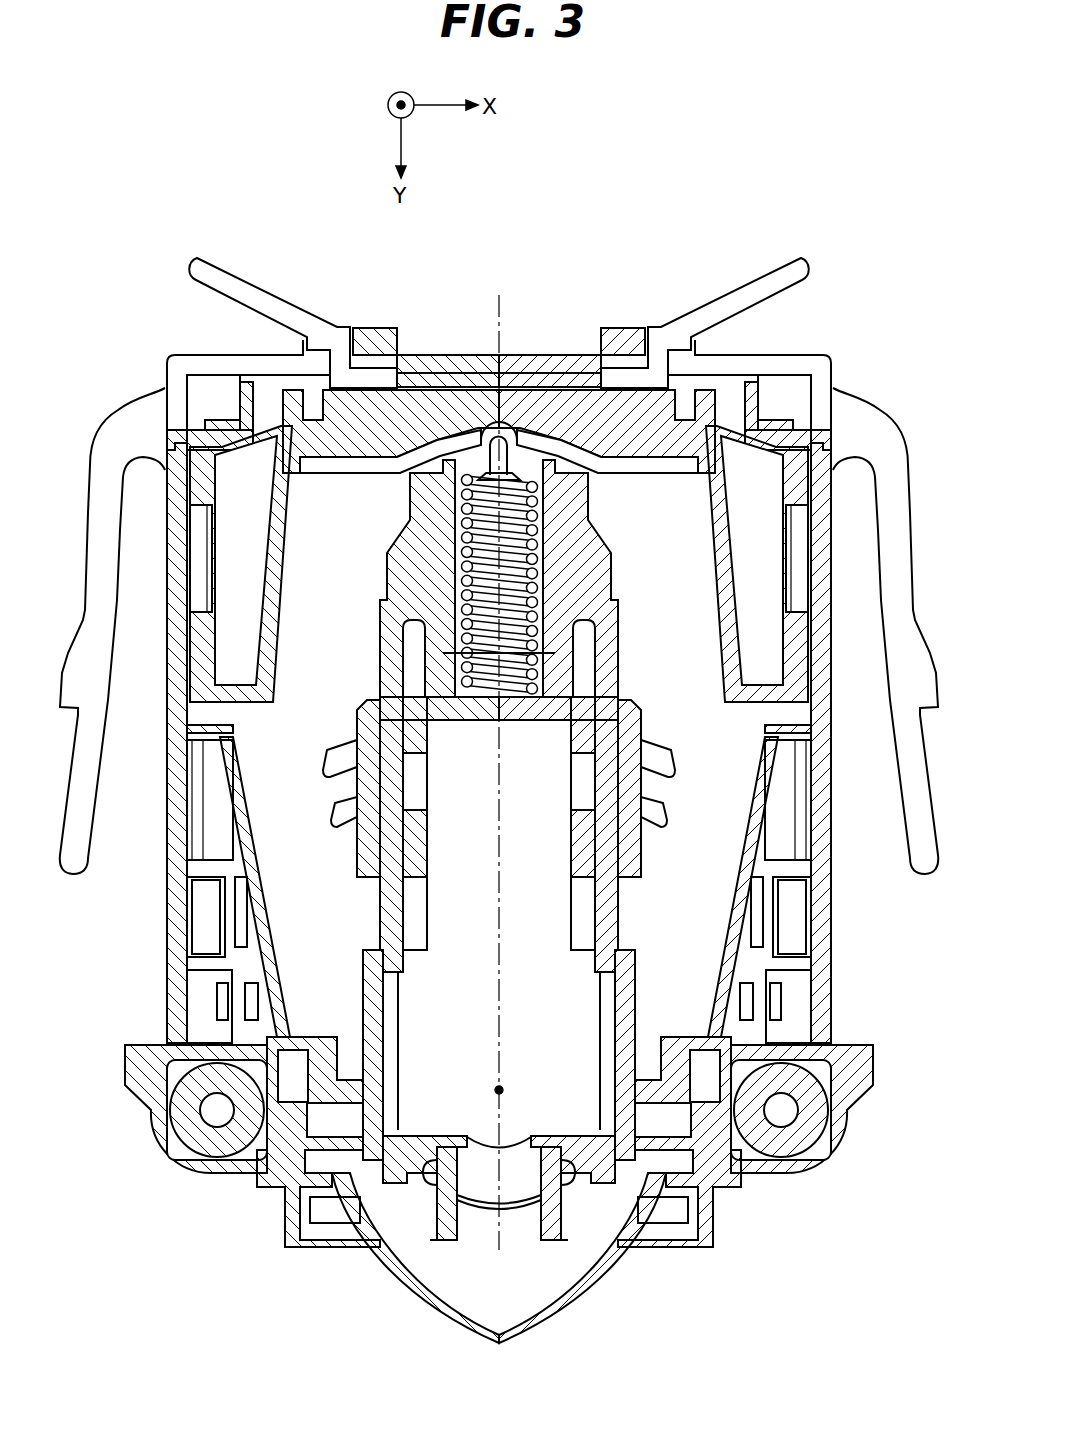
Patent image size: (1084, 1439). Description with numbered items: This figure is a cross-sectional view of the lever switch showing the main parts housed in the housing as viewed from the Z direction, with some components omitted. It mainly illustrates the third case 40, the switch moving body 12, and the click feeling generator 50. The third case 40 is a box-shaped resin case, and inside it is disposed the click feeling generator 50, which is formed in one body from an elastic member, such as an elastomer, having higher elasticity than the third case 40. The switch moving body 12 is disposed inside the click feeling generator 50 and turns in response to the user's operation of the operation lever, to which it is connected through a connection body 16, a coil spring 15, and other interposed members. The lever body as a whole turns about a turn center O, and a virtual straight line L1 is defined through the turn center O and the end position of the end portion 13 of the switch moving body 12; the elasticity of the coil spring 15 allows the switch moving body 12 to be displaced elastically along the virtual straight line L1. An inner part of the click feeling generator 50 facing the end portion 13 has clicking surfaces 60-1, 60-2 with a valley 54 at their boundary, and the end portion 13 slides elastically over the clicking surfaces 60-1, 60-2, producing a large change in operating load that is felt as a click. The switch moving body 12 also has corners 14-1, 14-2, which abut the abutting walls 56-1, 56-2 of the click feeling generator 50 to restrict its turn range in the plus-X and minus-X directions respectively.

The switch moving body 12 is at (617, 623).
The end portion 13 is at (527, 475).
The corner 14-1 is at (641, 466).
The corner 14-2 is at (387, 553).
The coil spring 15 is at (383, 602).
The connection body 16 is at (362, 998).
The third case 40 is at (790, 362).
The click feeling generator 50 is at (718, 410).
The valley 54 is at (477, 433).
The abutting wall 56-1 is at (705, 590).
The abutting wall 56-2 is at (293, 590).
The clicking surface 60-1 is at (668, 487).
The clicking surface 60-2 is at (330, 487).
The virtual straight line L1 is at (498, 990).
The turn center O is at (503, 1090).